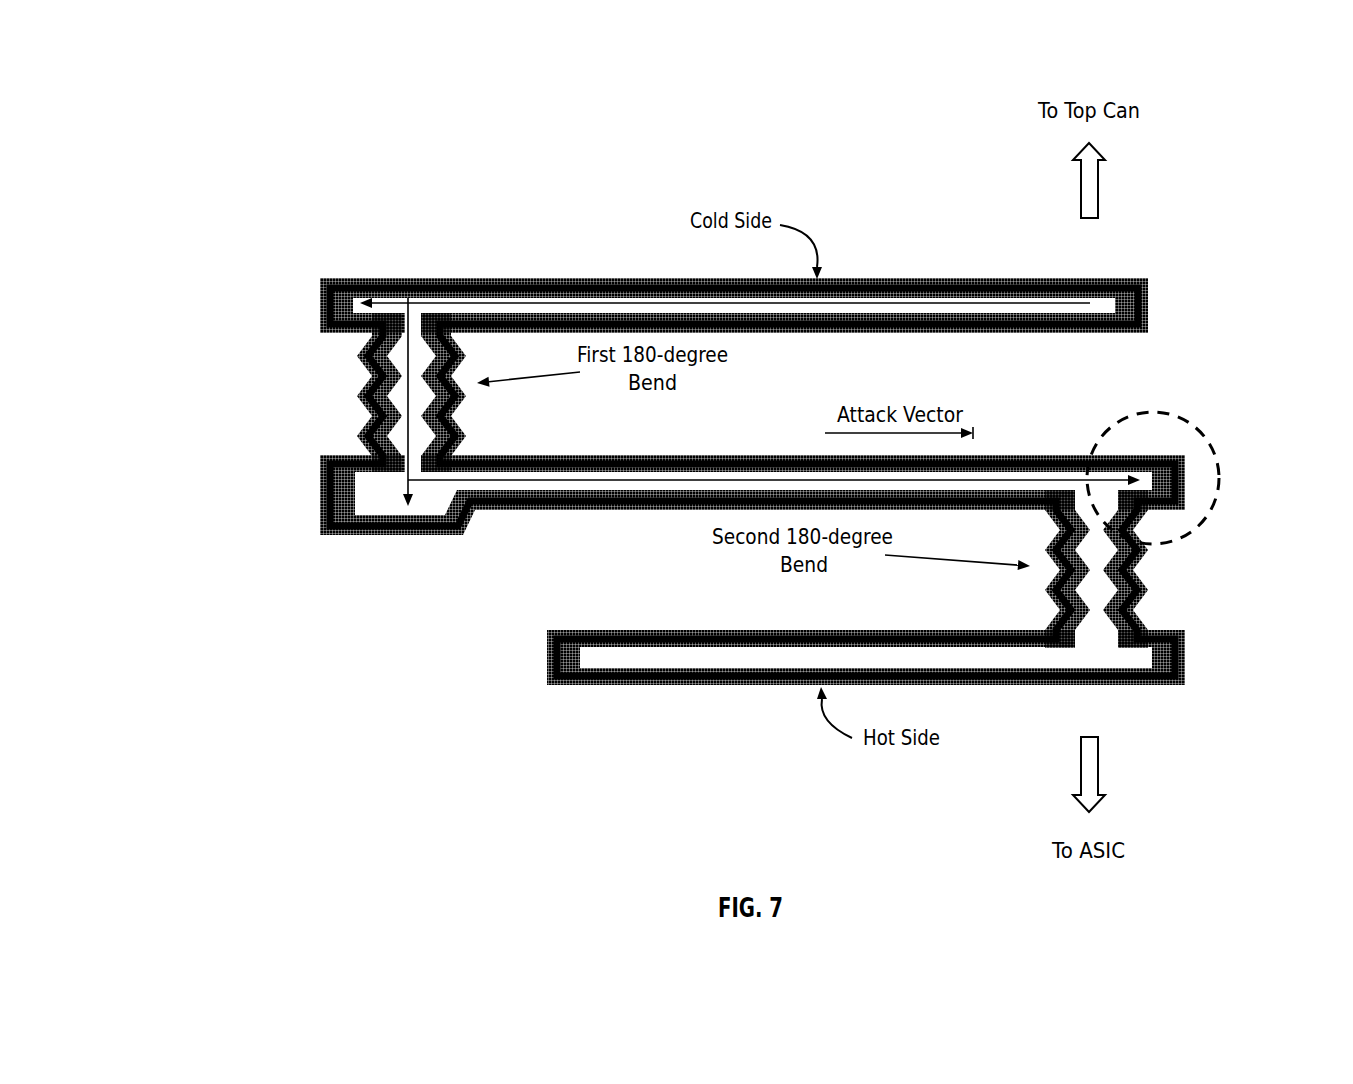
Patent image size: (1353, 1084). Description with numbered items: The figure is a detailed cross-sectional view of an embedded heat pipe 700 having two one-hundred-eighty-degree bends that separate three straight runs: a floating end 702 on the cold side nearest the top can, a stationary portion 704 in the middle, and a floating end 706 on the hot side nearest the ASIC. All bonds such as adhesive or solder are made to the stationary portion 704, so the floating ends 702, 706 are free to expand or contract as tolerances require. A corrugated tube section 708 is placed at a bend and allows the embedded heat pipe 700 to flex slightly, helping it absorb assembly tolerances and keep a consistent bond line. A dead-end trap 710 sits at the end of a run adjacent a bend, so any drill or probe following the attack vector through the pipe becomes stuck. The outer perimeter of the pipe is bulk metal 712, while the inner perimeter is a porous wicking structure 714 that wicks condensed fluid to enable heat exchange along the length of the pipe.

The embedded heat pipe 700 is at (289, 107).
The floating end 702 is at (293, 303).
The stationary portion 704 is at (304, 501).
The floating end 706 is at (525, 655).
The corrugated tube section 708 is at (312, 450).
The dead-end trap 710 is at (1204, 428).
The bulk metal 712 is at (323, 282).
The wicking structure 714 is at (350, 287).